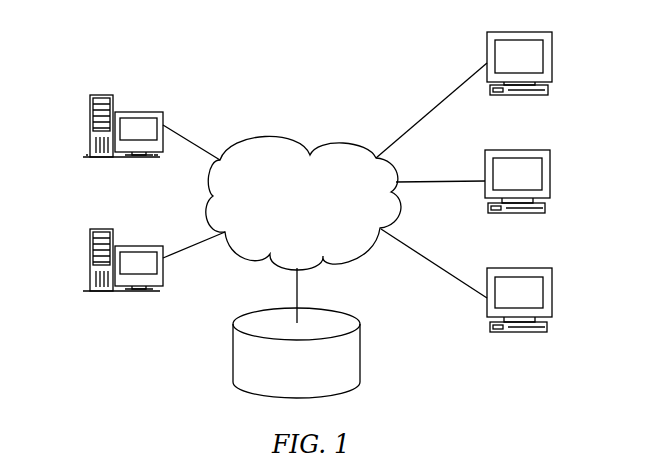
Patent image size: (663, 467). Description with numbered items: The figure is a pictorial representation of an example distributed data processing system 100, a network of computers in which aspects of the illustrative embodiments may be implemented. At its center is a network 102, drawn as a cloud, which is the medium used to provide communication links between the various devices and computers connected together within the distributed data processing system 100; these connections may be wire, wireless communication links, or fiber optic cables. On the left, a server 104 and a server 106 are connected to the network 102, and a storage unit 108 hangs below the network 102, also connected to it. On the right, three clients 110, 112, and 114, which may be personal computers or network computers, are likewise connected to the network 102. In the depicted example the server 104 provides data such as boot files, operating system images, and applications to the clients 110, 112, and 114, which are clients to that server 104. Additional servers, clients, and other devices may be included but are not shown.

The distributed data processing system 100 is at (368, 72).
The network 102 is at (285, 143).
The server 104 is at (90, 127).
The server 106 is at (90, 260).
The storage unit 108 is at (233, 350).
The client 110 is at (552, 63).
The client 112 is at (550, 181).
The client 114 is at (552, 300).